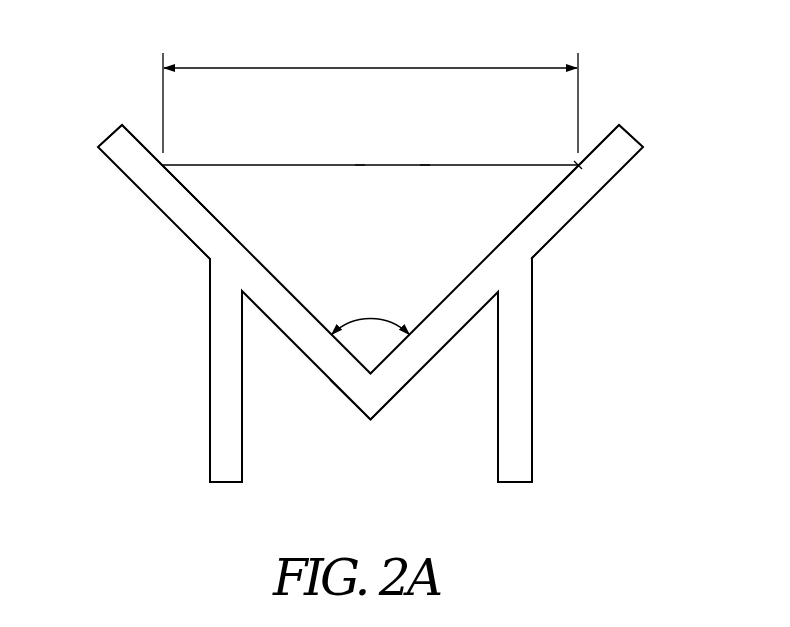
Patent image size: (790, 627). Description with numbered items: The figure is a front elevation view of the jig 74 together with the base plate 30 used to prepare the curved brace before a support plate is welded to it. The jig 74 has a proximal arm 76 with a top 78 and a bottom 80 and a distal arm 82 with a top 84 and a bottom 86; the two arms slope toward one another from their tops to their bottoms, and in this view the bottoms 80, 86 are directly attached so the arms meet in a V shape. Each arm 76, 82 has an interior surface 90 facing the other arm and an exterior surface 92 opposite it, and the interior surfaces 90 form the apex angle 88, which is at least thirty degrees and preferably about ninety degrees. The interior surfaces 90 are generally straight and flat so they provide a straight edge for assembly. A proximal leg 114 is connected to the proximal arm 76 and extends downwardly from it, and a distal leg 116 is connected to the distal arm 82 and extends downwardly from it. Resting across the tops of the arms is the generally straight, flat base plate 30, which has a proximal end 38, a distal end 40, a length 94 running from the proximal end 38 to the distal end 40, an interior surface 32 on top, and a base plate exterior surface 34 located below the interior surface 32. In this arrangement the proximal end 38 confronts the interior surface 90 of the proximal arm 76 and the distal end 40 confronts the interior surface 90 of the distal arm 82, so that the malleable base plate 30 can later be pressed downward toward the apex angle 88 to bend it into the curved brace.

The jig 74 is at (644, 345).
The length 94 is at (353, 67).
The base plate exterior surface 34 is at (302, 167).
The base plate 30 is at (360, 165).
The interior surface 32 is at (425, 165).
The proximal end 38 is at (165, 160).
The distal end 40 is at (577, 160).
The top 78 is at (110, 134).
The top 84 is at (632, 134).
The proximal arm 76 is at (163, 200).
The distal arm 82 is at (578, 200).
The interior surface 90 is at (213, 213).
The exterior surface 92 is at (193, 247).
The apex angle 88 is at (369, 318).
The bottom 80 is at (332, 370).
The bottom 86 is at (392, 390).
The proximal leg 114 is at (217, 413).
The distal leg 116 is at (523, 413).